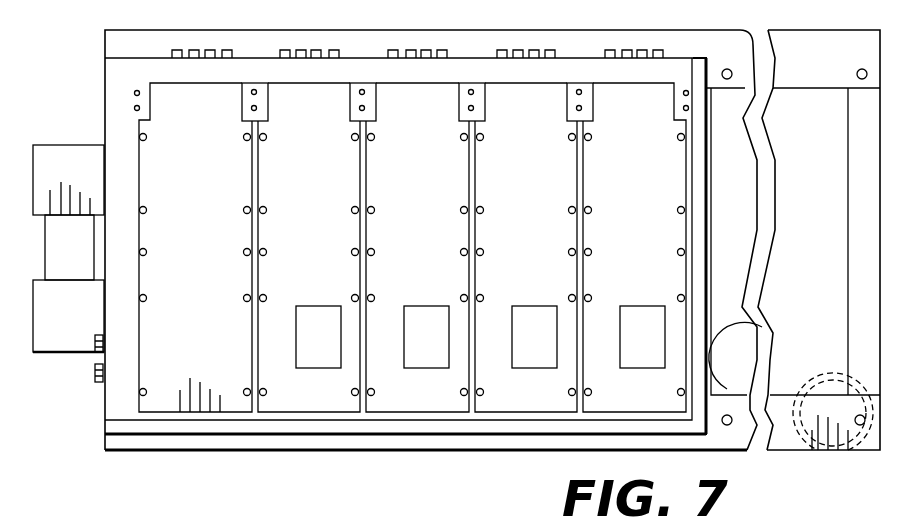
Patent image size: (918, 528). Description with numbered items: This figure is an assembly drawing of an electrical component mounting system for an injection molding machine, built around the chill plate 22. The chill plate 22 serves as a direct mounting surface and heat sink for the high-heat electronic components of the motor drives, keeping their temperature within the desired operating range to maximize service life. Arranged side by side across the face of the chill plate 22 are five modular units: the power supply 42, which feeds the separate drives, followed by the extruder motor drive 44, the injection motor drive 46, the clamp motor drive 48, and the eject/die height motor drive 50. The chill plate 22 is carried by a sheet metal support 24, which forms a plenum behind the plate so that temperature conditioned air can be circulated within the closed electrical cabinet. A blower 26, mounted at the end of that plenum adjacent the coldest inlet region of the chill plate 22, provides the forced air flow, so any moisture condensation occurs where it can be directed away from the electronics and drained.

The chill plate 22 is at (118, 88).
The sheet metal support 24 is at (826, 70).
The blower 26 is at (63, 340).
The power supply 42 is at (176, 205).
The extruder motor drive 44 is at (292, 205).
The injection motor drive 46 is at (403, 205).
The clamp motor drive 48 is at (506, 205).
The eject/die height motor drive 50 is at (614, 205).